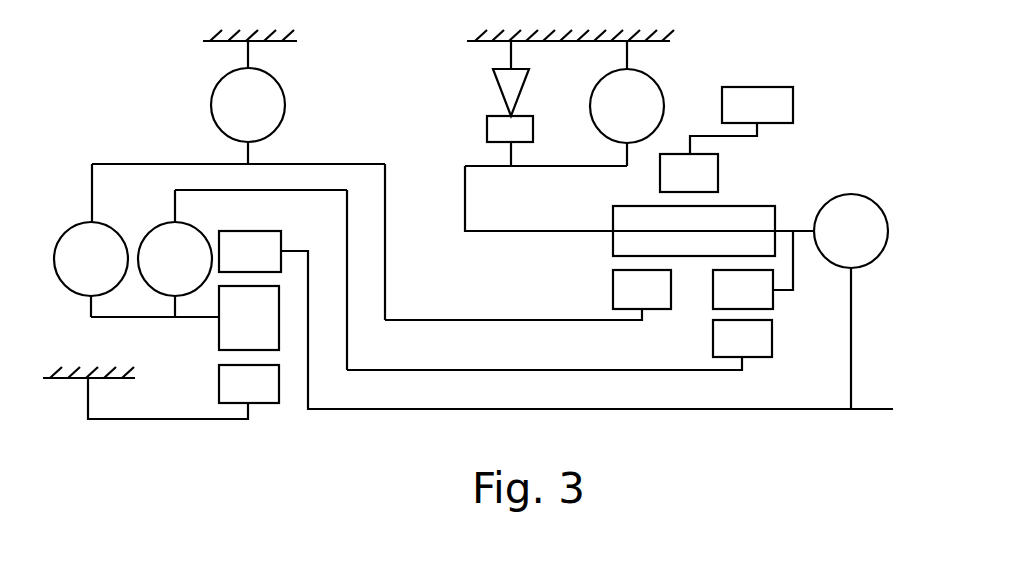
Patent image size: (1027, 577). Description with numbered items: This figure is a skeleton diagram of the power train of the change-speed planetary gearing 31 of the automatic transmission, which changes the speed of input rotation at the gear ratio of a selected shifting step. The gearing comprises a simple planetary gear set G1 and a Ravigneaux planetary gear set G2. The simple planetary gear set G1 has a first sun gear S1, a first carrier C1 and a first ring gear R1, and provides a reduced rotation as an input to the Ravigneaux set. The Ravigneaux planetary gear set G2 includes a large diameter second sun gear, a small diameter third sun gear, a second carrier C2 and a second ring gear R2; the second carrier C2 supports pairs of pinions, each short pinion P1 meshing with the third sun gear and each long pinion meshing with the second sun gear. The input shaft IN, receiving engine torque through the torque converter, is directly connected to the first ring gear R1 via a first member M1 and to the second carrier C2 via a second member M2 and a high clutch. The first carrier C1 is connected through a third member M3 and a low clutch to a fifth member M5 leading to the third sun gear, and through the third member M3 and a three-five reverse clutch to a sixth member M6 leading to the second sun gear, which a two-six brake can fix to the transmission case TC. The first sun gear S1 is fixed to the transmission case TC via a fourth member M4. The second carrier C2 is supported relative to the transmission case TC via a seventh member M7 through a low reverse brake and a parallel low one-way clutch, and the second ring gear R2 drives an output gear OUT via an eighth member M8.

The change-speed planetary gearing 31 is at (787, 60).
The transmission case TC is at (284, 41).
The first member M1 is at (455, 409).
The second member M2 is at (852, 303).
The third member M3 is at (140, 317).
The fourth member M4 is at (160, 419).
The fifth member M5 is at (457, 368).
The sixth member M6 is at (457, 318).
The seventh member M7 is at (465, 200).
The eighth member M8 is at (699, 135).
The simple planetary gear set G1 is at (269, 403).
The Ravigneaux planetary gear set G2 is at (766, 360).
The first carrier C1 is at (249, 318).
The second carrier C2 is at (612, 210).
The first ring gear R1 is at (250, 251).
The second ring gear R2 is at (689, 173).
The first sun gear S1 is at (249, 384).
The short pinion P1 is at (753, 270).
The output gear OUT is at (757, 105).
The input shaft IN is at (881, 391).